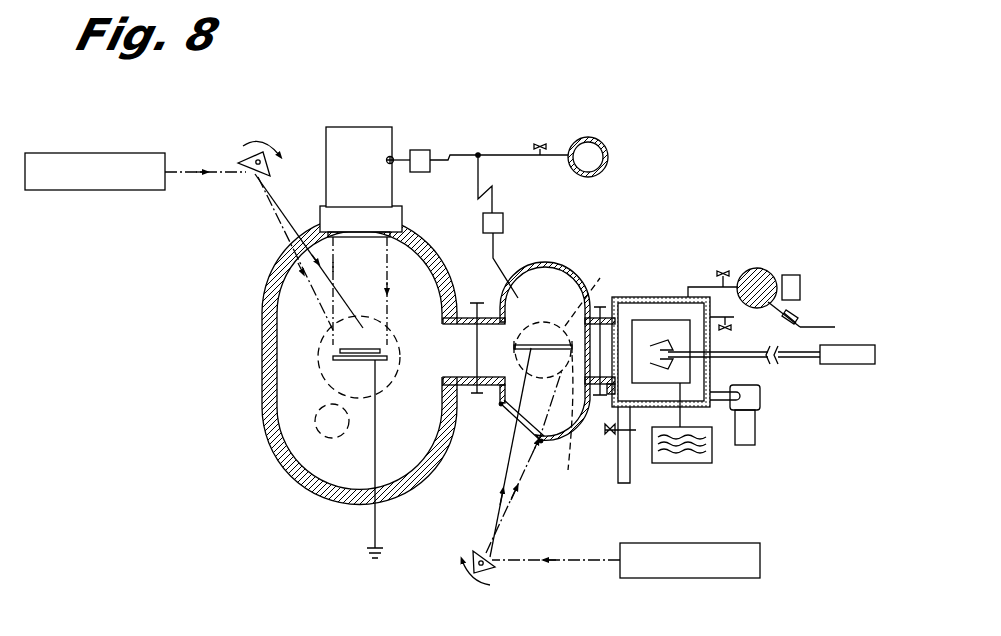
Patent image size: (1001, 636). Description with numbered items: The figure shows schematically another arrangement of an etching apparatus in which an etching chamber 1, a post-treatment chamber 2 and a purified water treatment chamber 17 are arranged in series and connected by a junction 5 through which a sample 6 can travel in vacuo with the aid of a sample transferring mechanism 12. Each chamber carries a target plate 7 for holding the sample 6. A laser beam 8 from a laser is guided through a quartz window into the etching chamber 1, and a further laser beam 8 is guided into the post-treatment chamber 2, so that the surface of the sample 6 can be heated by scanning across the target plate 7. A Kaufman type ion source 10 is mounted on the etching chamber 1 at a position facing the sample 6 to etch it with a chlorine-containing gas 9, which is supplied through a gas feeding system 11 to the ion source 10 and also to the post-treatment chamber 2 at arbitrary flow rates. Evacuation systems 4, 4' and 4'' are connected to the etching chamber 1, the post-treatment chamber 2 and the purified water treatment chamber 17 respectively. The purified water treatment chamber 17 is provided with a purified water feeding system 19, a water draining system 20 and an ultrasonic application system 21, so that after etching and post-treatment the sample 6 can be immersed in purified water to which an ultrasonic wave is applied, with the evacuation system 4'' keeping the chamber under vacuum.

The etching chamber 1 is at (266, 372).
The post-treatment chamber 2 is at (560, 264).
The evacuation system 4 is at (300, 382).
The evacuation system 4' is at (587, 367).
The evacuation system 4'' is at (763, 425).
The junction 5 is at (466, 393).
The sample 6 is at (340, 350).
The target plate 7 is at (378, 362).
The laser beam 8 is at (186, 175).
The chlorine-containing gas 9 is at (603, 146).
The Kaufman type ion source 10 is at (370, 128).
The gas feeding system 11 is at (430, 150).
The sample transferring mechanism 12 is at (833, 358).
The purified water treatment chamber 17 is at (652, 297).
The purified water feeding system 19 is at (766, 283).
The water draining system 20 is at (630, 483).
The ultrasonic application system 21 is at (706, 463).